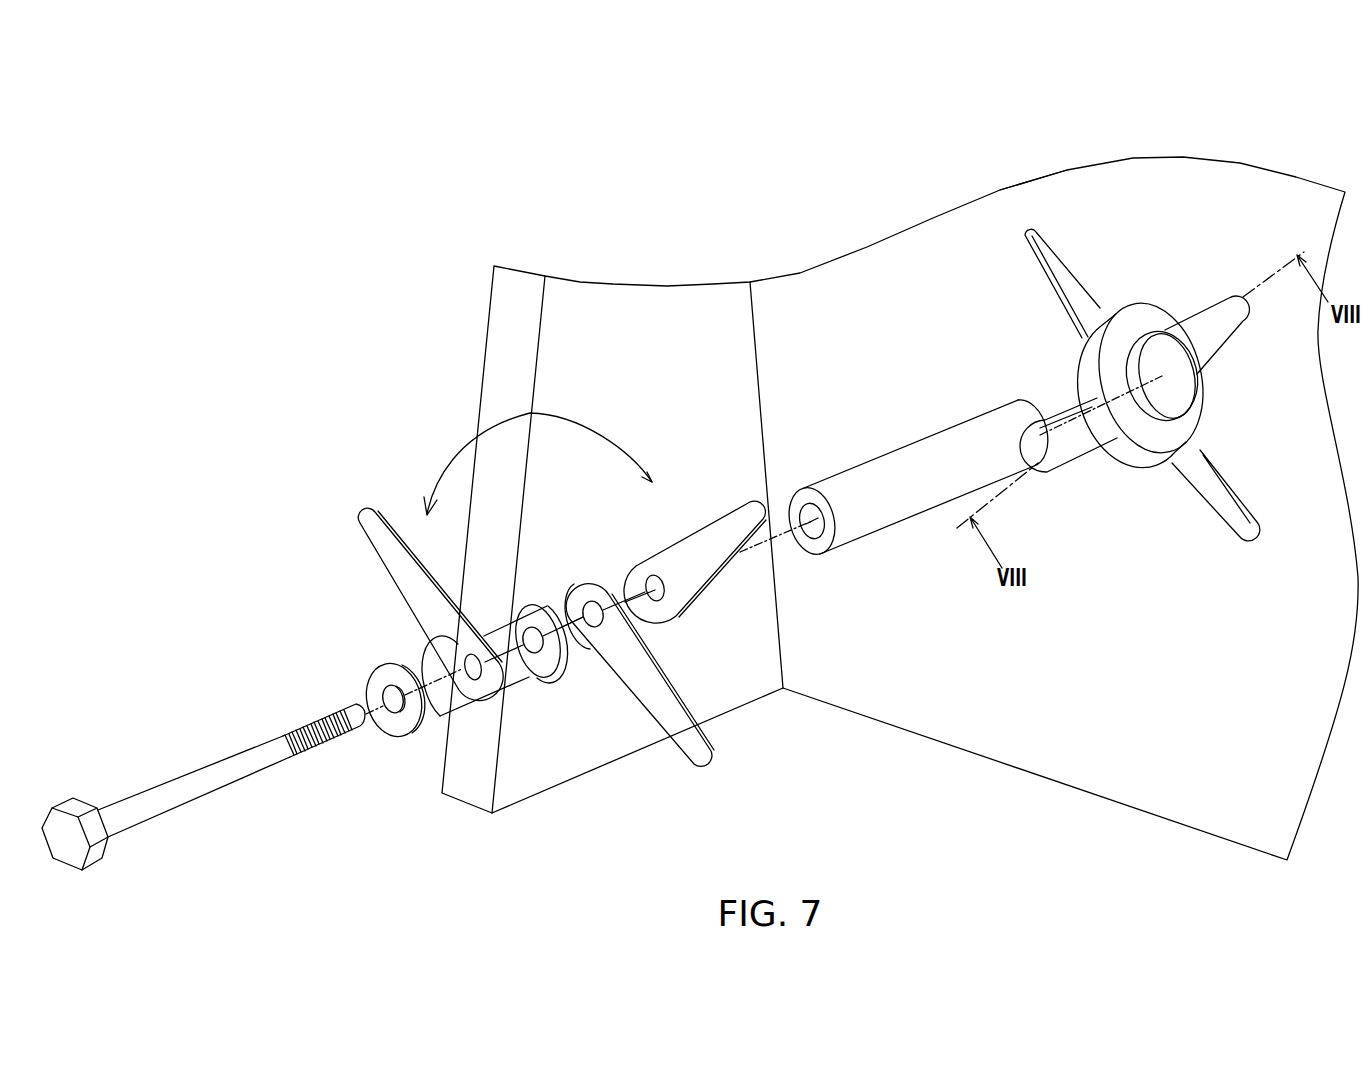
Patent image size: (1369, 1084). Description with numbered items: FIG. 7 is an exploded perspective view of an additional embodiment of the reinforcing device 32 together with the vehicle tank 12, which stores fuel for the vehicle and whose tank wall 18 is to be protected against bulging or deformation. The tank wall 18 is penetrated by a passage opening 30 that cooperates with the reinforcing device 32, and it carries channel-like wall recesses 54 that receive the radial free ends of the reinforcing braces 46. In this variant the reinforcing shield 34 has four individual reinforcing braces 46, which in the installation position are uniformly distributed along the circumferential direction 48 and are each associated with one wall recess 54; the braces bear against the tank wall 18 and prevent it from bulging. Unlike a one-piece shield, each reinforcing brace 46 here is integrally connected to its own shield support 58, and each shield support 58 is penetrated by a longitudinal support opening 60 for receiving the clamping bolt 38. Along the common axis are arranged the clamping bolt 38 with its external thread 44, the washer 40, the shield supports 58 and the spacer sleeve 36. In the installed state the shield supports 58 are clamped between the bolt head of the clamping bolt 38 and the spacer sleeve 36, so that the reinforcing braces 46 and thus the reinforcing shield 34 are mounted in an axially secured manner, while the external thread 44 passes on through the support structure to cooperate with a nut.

The vehicle tank 12 is at (435, 340).
The tank wall 18 is at (1082, 220).
The passage opening 30 is at (1190, 375).
The reinforcing device 32 is at (552, 728).
The reinforcing shield 34 is at (574, 668).
The spacer sleeve 36 is at (923, 417).
The clamping bolt 38 is at (212, 801).
The washer 40 is at (398, 753).
The external thread 44 is at (333, 743).
The reinforcing braces 46 is at (388, 575).
The circumferential direction 48 is at (575, 428).
The wall recesses 54 is at (1068, 283).
The shield support 58 is at (545, 690).
The support opening 60 is at (512, 625).